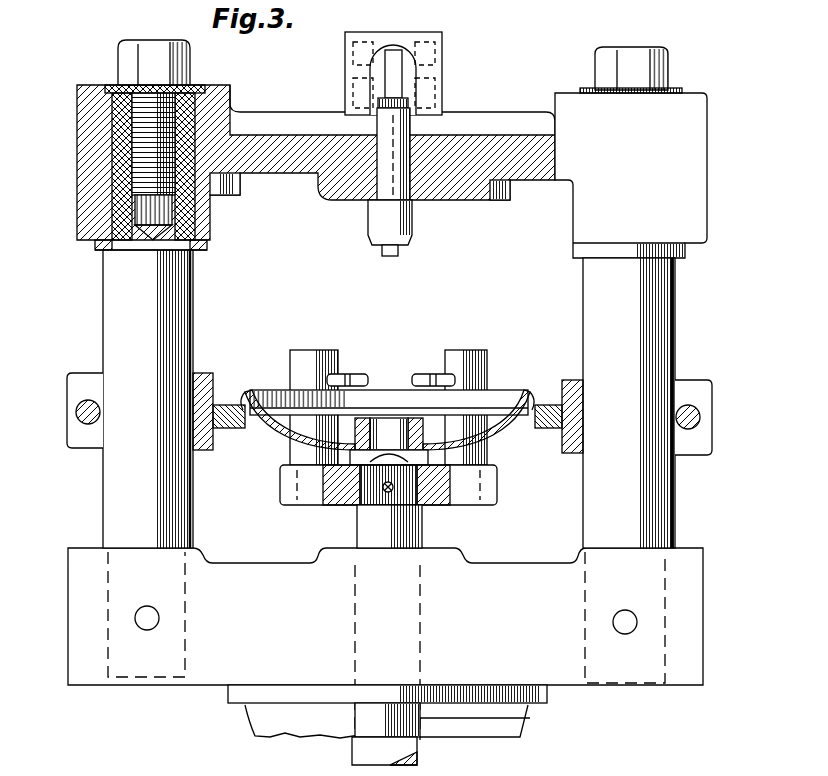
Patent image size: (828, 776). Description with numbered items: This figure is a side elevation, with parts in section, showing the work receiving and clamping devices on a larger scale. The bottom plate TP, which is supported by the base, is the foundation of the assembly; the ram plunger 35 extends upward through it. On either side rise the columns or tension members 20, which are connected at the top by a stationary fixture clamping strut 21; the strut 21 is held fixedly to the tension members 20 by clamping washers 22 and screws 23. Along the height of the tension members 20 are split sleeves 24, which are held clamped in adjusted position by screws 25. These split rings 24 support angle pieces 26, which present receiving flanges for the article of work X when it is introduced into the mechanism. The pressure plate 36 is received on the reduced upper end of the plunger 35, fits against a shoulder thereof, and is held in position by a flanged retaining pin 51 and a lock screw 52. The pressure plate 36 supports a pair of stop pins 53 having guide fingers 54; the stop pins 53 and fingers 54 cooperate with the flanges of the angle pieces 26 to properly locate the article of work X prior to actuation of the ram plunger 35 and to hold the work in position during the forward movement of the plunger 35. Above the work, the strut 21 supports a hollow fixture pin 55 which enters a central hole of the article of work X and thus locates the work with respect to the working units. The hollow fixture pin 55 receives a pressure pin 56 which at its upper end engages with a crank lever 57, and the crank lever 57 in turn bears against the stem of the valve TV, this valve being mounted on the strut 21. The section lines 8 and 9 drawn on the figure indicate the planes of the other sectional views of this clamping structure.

The section line 8- 8 is at (148, 303).
The section line 9- 9 is at (375, 20).
The threaded columns 20 is at (673, 348).
The cross head 21 is at (498, 143).
The washer 22 is at (676, 90).
The nut 23 is at (663, 63).
The bracket 24 is at (705, 398).
The pin hole 25 is at (700, 420).
The sleeve 26 is at (565, 380).
The ram plunger 35 is at (420, 530).
The pressure plate 36 is at (490, 488).
The flanged retaining pin 51 is at (380, 462).
The lock screw 52 is at (388, 492).
The stop pins 53 is at (460, 355).
The guide fingers 54 is at (414, 374).
The hollow fixture pin 55 is at (410, 225).
The pressure pin 56 is at (400, 250).
The crank lever 57 is at (395, 67).
The article of work X is at (498, 400).
The valve TV is at (438, 82).
The bottom plate TP is at (700, 641).